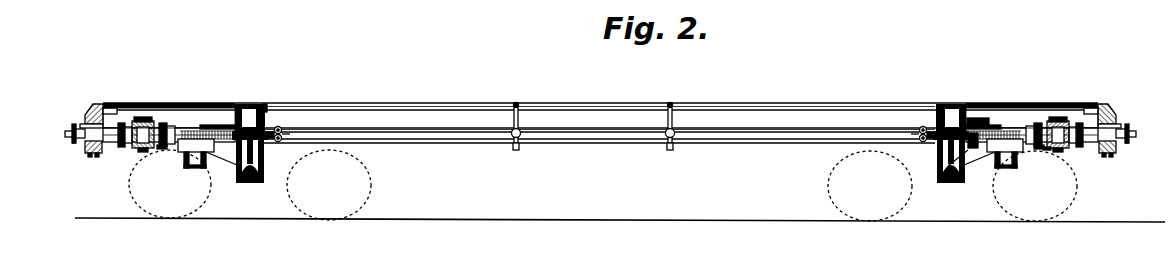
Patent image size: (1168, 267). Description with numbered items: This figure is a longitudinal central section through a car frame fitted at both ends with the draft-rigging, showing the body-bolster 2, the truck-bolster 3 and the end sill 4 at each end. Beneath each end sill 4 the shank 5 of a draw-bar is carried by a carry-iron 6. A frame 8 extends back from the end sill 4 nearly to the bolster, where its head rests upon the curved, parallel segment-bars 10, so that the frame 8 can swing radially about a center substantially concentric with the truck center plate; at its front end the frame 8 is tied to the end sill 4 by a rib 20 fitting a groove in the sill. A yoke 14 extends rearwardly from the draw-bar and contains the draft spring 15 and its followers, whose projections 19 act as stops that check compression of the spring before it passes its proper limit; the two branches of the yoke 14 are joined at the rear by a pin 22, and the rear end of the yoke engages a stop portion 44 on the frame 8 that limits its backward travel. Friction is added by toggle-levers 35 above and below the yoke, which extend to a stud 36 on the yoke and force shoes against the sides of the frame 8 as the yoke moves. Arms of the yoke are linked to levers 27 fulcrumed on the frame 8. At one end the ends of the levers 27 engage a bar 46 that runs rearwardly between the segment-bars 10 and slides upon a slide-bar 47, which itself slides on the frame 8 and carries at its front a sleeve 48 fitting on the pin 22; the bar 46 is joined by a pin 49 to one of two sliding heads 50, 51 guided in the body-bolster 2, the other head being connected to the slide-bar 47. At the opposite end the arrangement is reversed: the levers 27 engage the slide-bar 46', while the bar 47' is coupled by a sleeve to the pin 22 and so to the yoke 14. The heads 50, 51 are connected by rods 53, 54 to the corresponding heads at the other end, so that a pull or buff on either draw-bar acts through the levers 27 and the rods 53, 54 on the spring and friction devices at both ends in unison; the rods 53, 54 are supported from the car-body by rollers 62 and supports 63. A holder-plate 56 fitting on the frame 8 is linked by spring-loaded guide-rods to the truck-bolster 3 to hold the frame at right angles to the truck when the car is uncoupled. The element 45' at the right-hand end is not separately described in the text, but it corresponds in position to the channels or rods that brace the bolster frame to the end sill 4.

The body-bolster 2 is at (600, 109).
The truck-bolster 3 is at (265, 150).
The end sill 4 is at (85, 110).
The shank of draw-bar 5 is at (72, 140).
The carry-iron 6 is at (87, 150).
The frame 8 is at (112, 105).
The segment-bars 10 is at (978, 118).
The yoke 14 is at (168, 144).
The draft spring 15 is at (150, 118).
The projections 19 is at (72, 131).
The rib 20 is at (82, 124).
The pin 22 is at (163, 150).
The levers 27 is at (180, 152).
The toggle-levers 35 is at (134, 148).
The stud 36 is at (143, 120).
The stop portion 44 is at (185, 127).
The lug 45' is at (1058, 161).
The bar 46 is at (169, 118).
The slide-bar 46' is at (1032, 151).
The slide-bar 47 is at (222, 105).
The bar 47' is at (990, 117).
The sleeve 48 is at (168, 122).
The pin 49 is at (266, 112).
The sliding head 50 is at (279, 126).
The sliding head 51 is at (284, 141).
The rod 53 is at (872, 124).
The rod 54 is at (836, 143).
The holder-plate 56 is at (237, 160).
The rollers 62 is at (520, 137).
The supports 63 is at (516, 150).